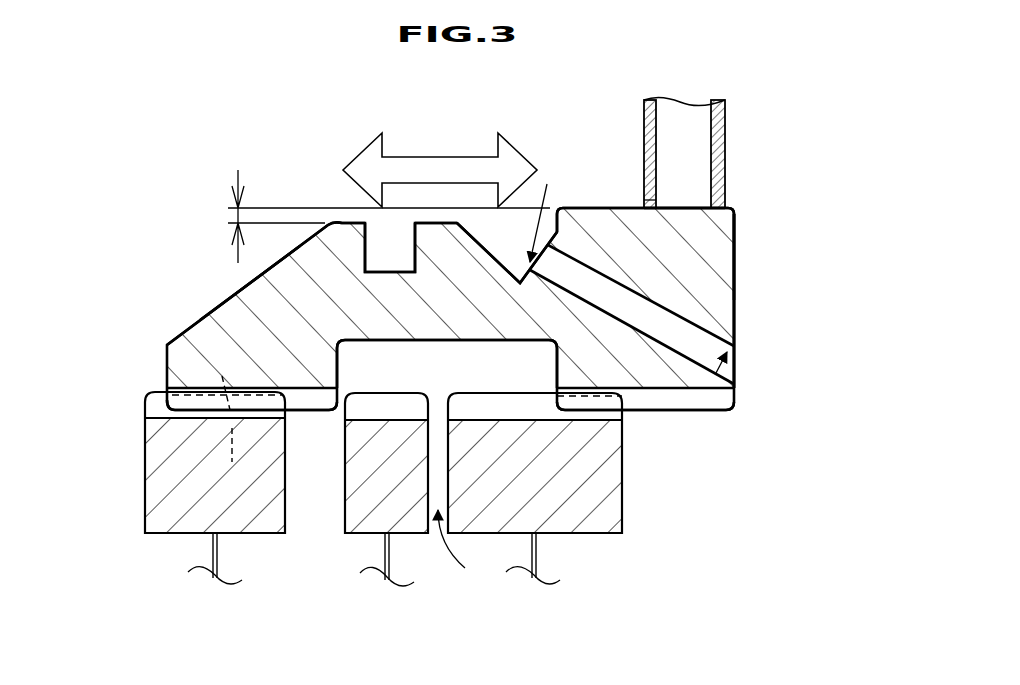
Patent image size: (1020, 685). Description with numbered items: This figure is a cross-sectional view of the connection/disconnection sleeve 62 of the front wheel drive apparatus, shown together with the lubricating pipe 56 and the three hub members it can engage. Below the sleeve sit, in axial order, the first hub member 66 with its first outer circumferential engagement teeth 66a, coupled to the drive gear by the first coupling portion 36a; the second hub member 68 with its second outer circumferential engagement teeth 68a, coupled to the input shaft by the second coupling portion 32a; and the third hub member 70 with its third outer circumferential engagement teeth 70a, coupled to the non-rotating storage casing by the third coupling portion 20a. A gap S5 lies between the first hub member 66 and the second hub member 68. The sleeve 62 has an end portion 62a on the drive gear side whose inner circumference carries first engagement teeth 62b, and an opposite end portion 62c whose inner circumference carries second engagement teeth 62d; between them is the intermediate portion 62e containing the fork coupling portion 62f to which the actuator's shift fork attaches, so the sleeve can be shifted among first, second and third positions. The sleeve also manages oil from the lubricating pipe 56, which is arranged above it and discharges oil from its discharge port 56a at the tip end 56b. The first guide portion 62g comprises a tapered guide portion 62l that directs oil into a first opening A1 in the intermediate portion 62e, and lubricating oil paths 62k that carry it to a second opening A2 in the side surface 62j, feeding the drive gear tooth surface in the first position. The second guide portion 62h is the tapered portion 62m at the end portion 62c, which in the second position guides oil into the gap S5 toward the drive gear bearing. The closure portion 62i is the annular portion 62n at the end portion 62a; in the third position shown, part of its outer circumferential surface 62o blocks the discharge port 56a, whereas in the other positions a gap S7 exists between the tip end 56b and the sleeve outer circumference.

The connection/disconnection sleeve 62 is at (231, 103).
The end portion 62a is at (745, 200).
The first engagement teeth 62b is at (662, 405).
The end portion 62c is at (163, 300).
The second engagement teeth 62d is at (338, 420).
The intermediate portion 62e is at (349, 200).
The fork coupling portion 62f is at (430, 243).
The first guide portion 62g is at (508, 250).
The second guide portion 62h is at (281, 246).
The closure portion 62i is at (746, 277).
The side surface 62j is at (764, 297).
The lubricating oil paths 62k is at (662, 320).
The tapered guide portion 62l is at (487, 248).
The tapered portion 62m is at (253, 265).
The annular portion 62n is at (737, 253).
The outer circumferential surface 62o is at (670, 196).
The lubricating pipe 56 is at (725, 137).
The discharge port 56a is at (690, 224).
The tip end 56b is at (648, 224).
The first hub member 66 is at (605, 473).
The first outer circumferential engagement teeth 66a is at (495, 412).
The second hub member 68 is at (367, 482).
The second outer circumferential engagement teeth 68a is at (384, 412).
The third hub member 70 is at (170, 468).
The third outer circumferential engagement teeth 70a is at (231, 456).
The third coupling portion 20a is at (212, 553).
The second coupling portion 32a is at (384, 553).
The first coupling portion 36a is at (537, 553).
The gap S5 is at (459, 552).
The gap S7 is at (373, 216).
The first opening A1 is at (548, 211).
The second opening A2 is at (740, 368).